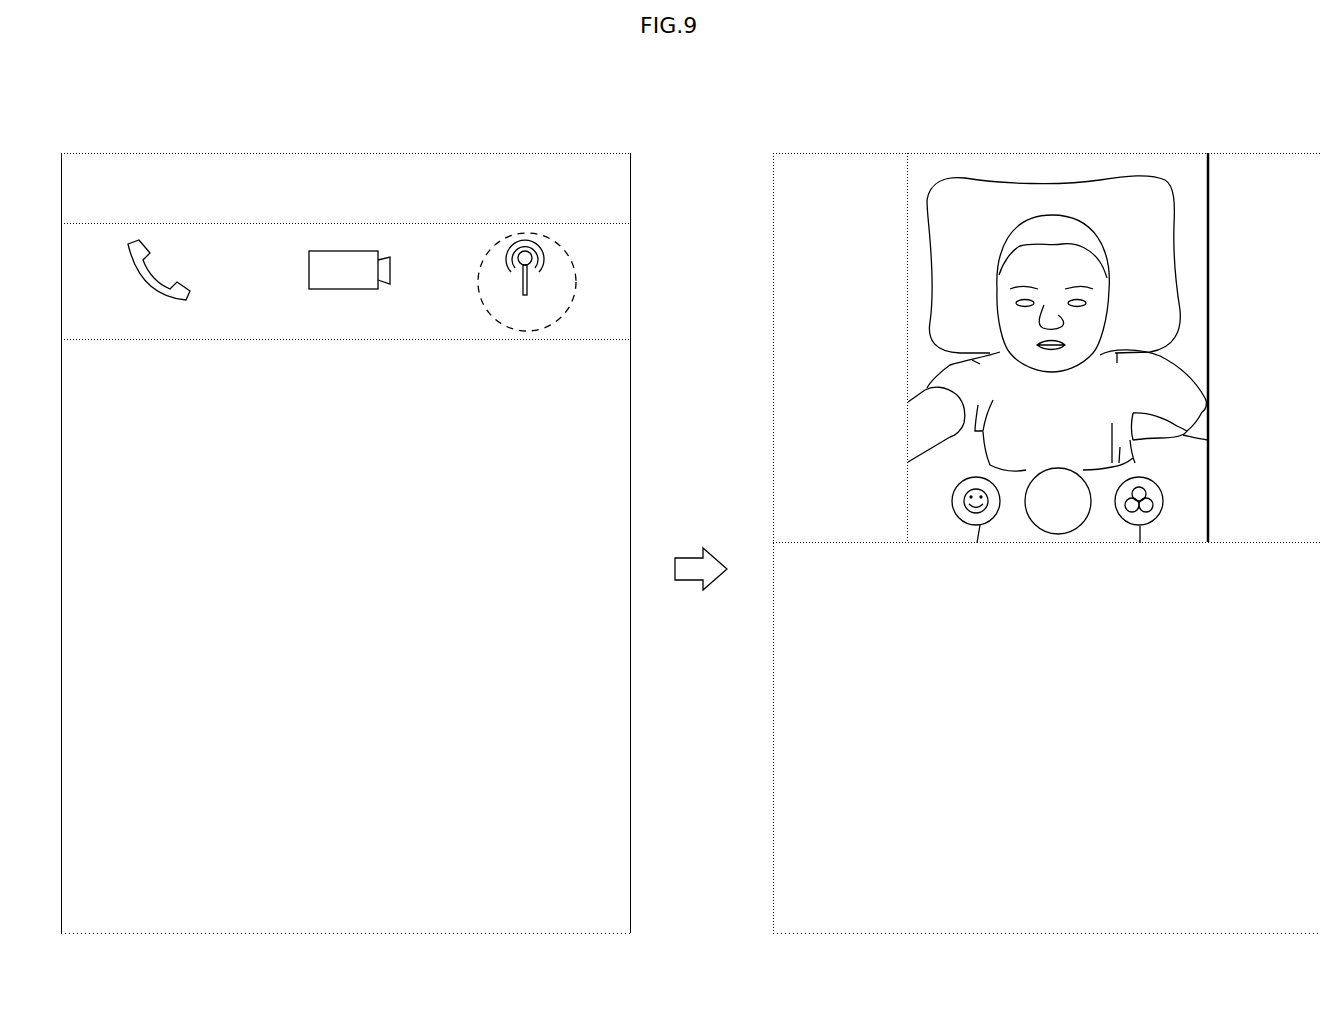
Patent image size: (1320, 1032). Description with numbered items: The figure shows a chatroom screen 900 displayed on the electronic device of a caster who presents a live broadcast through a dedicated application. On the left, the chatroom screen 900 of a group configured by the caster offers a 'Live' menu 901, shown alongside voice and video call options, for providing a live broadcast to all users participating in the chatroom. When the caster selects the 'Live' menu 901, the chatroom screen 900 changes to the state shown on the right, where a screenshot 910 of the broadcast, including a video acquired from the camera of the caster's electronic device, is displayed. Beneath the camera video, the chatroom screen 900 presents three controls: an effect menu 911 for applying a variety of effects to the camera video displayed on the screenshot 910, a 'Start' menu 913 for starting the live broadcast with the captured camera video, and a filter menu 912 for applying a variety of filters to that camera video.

The chatroom screen 900 is at (360, 138).
The 'Live' menu 901 is at (577, 282).
The screenshot of a broadcast 910 is at (969, 382).
The effect menu 911 is at (947, 502).
The filter menu 912 is at (1163, 502).
The 'Start' menu 913 is at (1058, 534).